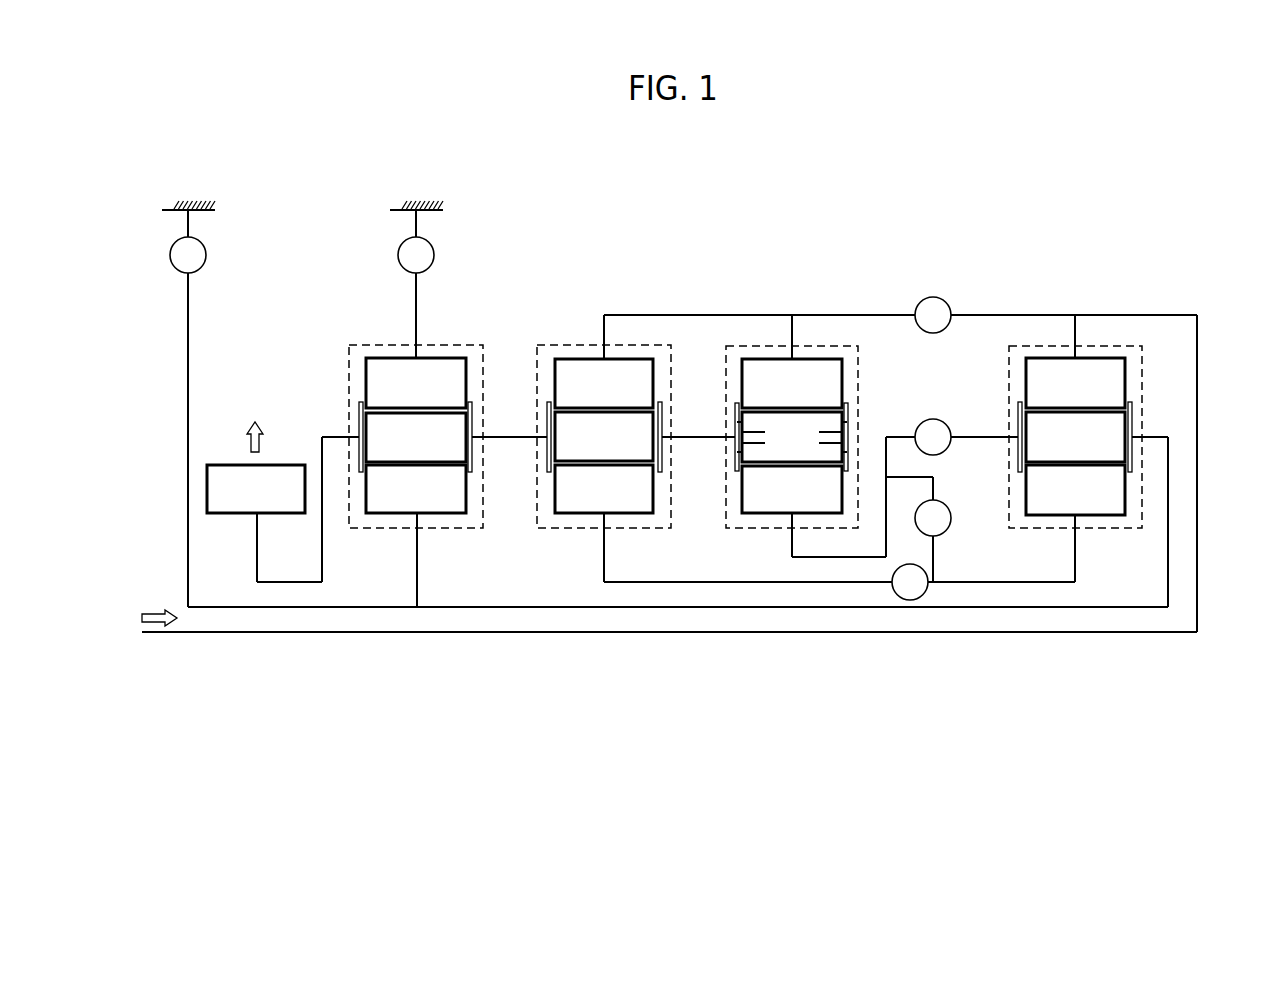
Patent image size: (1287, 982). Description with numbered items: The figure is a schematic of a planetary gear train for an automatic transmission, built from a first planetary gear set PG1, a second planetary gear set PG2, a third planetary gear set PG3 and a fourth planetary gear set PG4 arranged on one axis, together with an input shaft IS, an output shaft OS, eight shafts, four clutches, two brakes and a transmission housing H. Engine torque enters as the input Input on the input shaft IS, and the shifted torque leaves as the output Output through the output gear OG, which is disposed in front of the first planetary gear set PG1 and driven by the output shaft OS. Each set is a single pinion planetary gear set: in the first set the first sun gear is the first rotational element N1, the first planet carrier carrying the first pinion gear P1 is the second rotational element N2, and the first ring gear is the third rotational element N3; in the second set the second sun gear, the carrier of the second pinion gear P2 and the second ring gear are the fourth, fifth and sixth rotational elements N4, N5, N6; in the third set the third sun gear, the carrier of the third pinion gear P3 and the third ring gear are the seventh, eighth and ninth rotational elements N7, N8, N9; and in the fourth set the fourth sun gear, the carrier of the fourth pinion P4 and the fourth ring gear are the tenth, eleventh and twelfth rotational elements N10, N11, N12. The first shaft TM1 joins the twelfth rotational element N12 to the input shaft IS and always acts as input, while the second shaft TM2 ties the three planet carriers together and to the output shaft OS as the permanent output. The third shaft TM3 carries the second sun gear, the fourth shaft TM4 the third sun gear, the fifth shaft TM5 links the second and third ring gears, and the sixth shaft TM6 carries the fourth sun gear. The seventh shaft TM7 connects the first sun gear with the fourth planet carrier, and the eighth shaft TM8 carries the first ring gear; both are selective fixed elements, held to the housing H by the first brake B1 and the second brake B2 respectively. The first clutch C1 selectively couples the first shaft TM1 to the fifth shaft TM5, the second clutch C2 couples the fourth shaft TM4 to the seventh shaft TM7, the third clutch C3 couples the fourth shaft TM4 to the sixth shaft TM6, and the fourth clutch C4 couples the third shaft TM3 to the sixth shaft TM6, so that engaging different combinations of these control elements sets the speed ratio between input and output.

The input shaft IS is at (190, 634).
The input Input is at (158, 606).
The output shaft OS is at (278, 584).
The output Output is at (255, 422).
The output gear OG is at (256, 489).
The transmission housing H is at (197, 207).
The first brake B1 is at (188, 241).
The second brake B2 is at (416, 241).
The first clutch C1 is at (933, 315).
The second clutch C2 is at (952, 437).
The third clutch C3 is at (933, 541).
The fourth clutch C4 is at (910, 582).
The first shaft TM1 is at (1140, 315).
The second shaft TM2 is at (693, 437).
The third shaft TM3 is at (697, 584).
The fourth shaft TM4 is at (845, 559).
The fifth shaft TM5 is at (830, 315).
The sixth shaft TM6 is at (980, 584).
The seventh shaft TM7 is at (189, 308).
The eighth shaft TM8 is at (417, 308).
The first planetary gear set PG1 is at (391, 535).
The second planetary gear set PG2 is at (571, 535).
The third planetary gear set PG3 is at (784, 535).
The fourth planetary gear set PG4 is at (1051, 534).
The first rotational element N1 is at (416, 489).
The second rotational element N2 is at (360, 410).
The third rotational element N3 is at (416, 383).
The fourth rotational element N4 is at (604, 489).
The fifth rotational element N5 is at (548, 410).
The sixth rotational element N6 is at (604, 383).
The seventh rotational element N7 is at (792, 489).
The eighth rotational element N8 is at (848, 410).
The ninth rotational element N9 is at (792, 383).
The tenth rotational element N10 is at (1075, 490).
The eleventh rotational element N11 is at (1019, 410).
The twelfth rotational element N12 is at (1075, 383).
The first pinion gear P1 is at (416, 437).
The second pinion gear P2 is at (604, 436).
The third pinion gear P3 is at (792, 437).
The fourth pinion P4 is at (1075, 437).